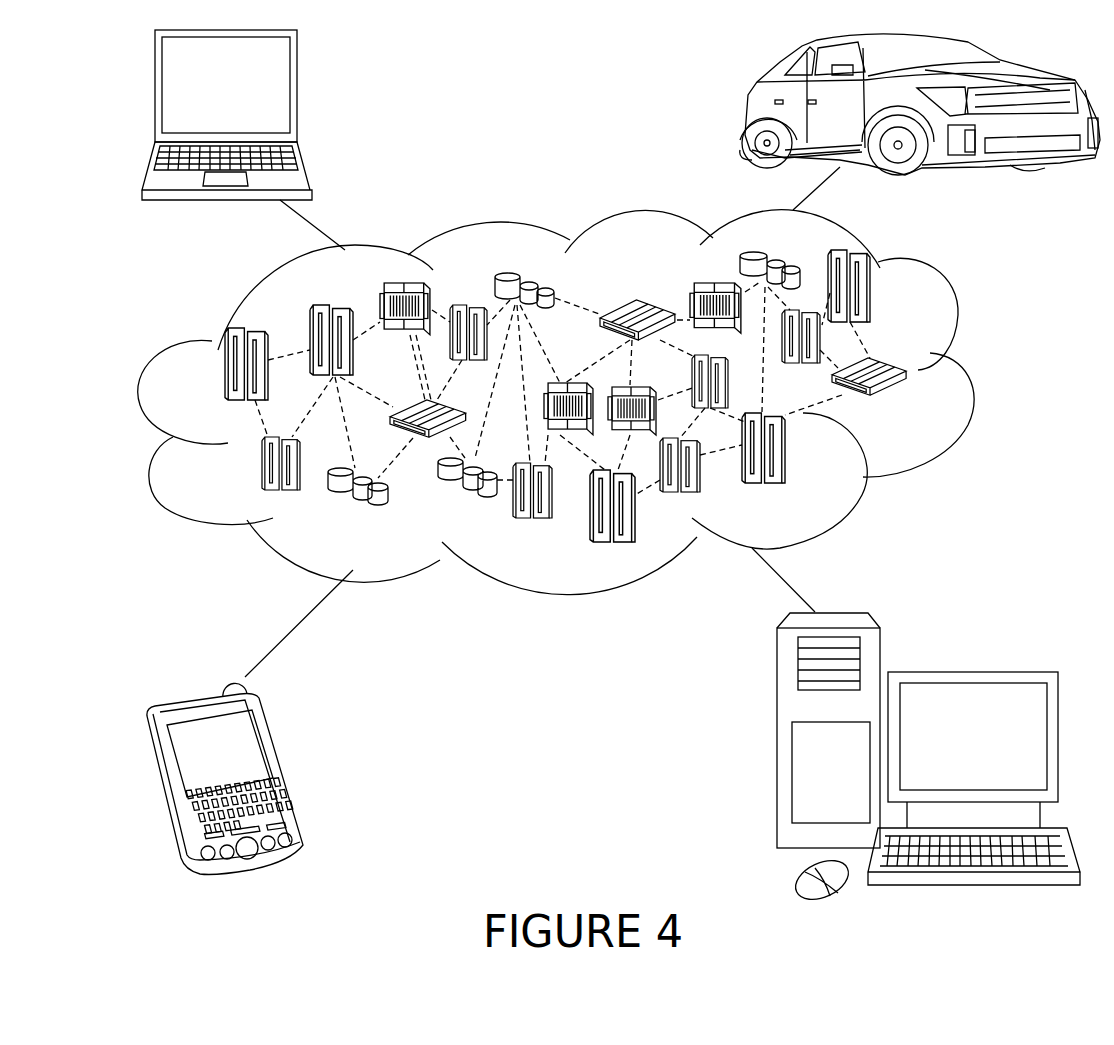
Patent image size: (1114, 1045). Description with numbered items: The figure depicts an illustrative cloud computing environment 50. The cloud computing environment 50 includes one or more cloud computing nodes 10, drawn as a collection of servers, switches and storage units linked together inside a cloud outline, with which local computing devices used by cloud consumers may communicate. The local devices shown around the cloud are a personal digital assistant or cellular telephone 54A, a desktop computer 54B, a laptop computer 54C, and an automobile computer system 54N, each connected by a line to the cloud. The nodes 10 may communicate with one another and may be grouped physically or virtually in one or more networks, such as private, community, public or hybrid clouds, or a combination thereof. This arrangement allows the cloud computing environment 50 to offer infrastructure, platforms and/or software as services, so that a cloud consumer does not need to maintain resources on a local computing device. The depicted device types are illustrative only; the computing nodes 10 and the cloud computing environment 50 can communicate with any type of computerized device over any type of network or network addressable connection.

The cloud computing nodes 10 is at (913, 405).
The cloud computing environment 50 is at (975, 373).
The personal digital assistant (PDA) or cellular telephone 54A is at (288, 767).
The desktop computer 54B is at (970, 672).
The laptop computer 54C is at (297, 93).
The automobile computer system 54N is at (748, 108).